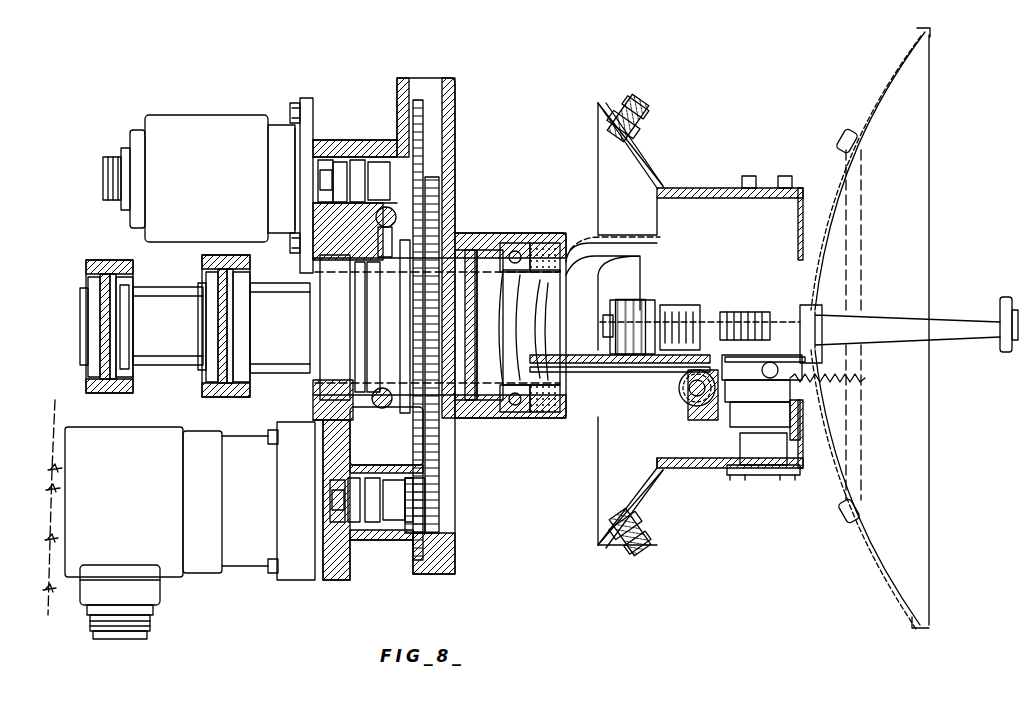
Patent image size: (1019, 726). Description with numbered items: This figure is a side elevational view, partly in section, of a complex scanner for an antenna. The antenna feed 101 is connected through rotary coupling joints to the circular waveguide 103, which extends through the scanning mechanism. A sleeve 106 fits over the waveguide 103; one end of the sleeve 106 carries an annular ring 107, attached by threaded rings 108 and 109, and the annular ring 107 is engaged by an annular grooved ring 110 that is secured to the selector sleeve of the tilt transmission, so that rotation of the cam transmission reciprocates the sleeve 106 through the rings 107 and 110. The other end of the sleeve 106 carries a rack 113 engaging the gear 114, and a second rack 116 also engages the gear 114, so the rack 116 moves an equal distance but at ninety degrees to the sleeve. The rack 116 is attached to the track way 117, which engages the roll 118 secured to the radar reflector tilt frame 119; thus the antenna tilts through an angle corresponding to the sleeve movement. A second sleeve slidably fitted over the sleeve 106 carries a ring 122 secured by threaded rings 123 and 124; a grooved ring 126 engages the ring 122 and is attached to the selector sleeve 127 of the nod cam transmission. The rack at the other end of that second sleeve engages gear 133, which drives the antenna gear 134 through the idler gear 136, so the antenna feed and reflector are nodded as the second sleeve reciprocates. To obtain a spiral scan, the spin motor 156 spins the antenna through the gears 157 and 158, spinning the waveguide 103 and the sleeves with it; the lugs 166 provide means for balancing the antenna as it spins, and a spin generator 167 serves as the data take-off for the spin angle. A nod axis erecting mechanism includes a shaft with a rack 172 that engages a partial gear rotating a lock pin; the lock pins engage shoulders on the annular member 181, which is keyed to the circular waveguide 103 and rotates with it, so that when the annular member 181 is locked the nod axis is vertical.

The antenna feed 101 is at (945, 323).
The circular waveguide 103 is at (553, 282).
The sleeve 106 is at (590, 372).
The annular ring 107 is at (108, 268).
The threaded ring 108 is at (90, 300).
The threaded ring 109 is at (136, 292).
The annular grooved ring 110 is at (101, 392).
The rack 113 is at (680, 372).
The gear 114 is at (682, 398).
The second rack 116 is at (718, 412).
The track way 117 is at (808, 363).
The roll 118 is at (847, 378).
The radar reflector tilt frame 119 is at (812, 440).
The ring 122 is at (232, 291).
The threaded ring 123 is at (250, 323).
The threaded ring 124 is at (208, 321).
The grooved ring 126 is at (217, 395).
The selector sleeve 127 is at (433, 204).
The gear 133 is at (636, 314).
The antenna gear 134 is at (742, 316).
The idler gear 136 is at (690, 316).
The spin motor 156 is at (168, 580).
The gear 157 is at (447, 512).
The gear 158 is at (452, 445).
The lug 166 is at (636, 106).
The spin generator 167 is at (190, 126).
The rack 172 is at (386, 206).
The annular member 181 is at (440, 240).